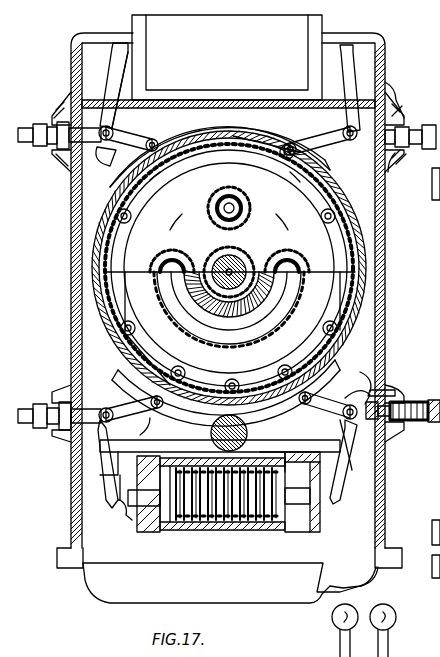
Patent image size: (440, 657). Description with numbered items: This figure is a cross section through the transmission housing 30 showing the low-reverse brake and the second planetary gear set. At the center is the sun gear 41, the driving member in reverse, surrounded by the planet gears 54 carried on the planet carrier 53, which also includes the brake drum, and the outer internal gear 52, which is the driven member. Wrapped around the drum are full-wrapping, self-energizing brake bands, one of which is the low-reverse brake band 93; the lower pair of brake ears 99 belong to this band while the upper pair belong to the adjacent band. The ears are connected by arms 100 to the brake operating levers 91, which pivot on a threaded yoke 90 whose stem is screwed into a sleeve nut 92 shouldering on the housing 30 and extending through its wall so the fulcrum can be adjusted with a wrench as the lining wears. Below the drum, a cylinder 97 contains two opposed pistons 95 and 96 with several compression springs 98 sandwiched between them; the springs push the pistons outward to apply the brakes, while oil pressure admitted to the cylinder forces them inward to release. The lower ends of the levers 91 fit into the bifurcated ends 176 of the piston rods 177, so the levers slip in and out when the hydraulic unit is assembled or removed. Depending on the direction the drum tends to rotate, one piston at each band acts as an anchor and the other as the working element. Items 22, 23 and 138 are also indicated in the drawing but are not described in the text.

The lead 22 is at (412, 552).
The terminal 23 is at (432, 180).
The housing 30 is at (385, 218).
The sun gear 41 is at (250, 244).
The internal gear 52 is at (207, 178).
The planet carrier 53 is at (243, 136).
The planet gears 54 is at (212, 205).
The yoke 90 is at (378, 88).
The brake operating levers 91 is at (360, 78).
The sleeve nut 92 is at (432, 398).
The low-reverse brake band 93 is at (365, 302).
The piston 95 is at (150, 534).
The piston 96 is at (296, 538).
The cylinder 97 is at (232, 544).
The compression springs 98 is at (255, 538).
The brake ears 99 is at (122, 372).
The arms 100 is at (330, 140).
The pan 138 is at (105, 600).
The bifurcated ends 176 is at (114, 508).
The piston rods 177 is at (137, 528).